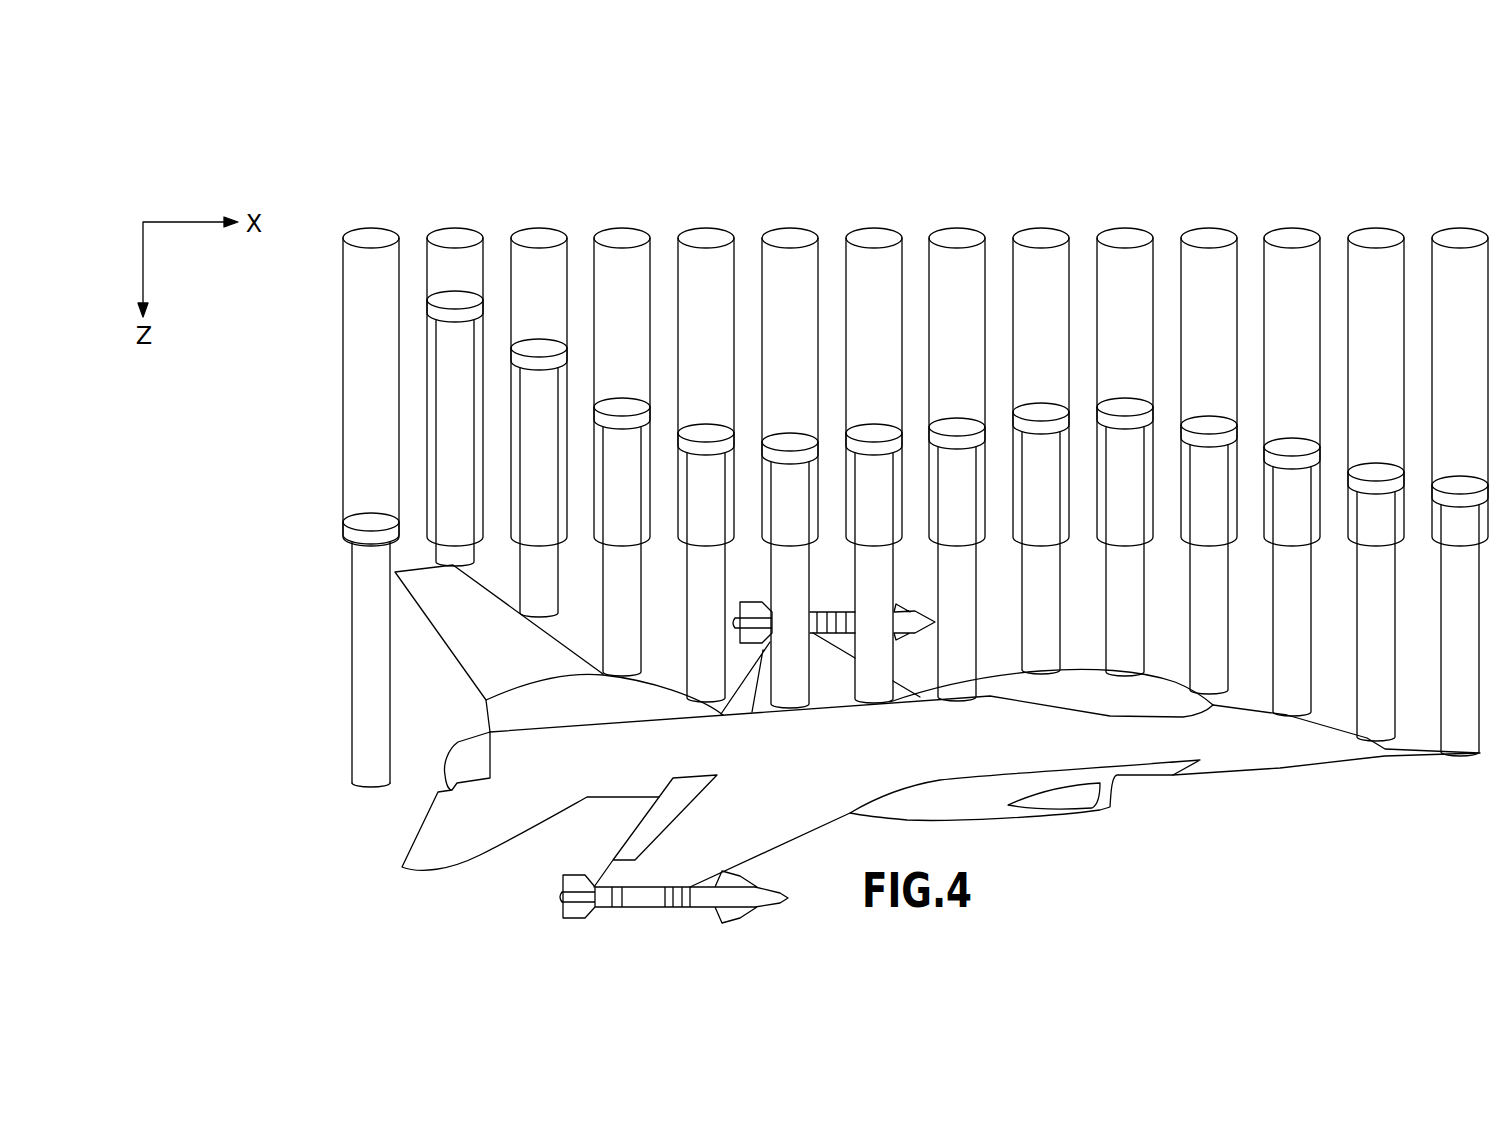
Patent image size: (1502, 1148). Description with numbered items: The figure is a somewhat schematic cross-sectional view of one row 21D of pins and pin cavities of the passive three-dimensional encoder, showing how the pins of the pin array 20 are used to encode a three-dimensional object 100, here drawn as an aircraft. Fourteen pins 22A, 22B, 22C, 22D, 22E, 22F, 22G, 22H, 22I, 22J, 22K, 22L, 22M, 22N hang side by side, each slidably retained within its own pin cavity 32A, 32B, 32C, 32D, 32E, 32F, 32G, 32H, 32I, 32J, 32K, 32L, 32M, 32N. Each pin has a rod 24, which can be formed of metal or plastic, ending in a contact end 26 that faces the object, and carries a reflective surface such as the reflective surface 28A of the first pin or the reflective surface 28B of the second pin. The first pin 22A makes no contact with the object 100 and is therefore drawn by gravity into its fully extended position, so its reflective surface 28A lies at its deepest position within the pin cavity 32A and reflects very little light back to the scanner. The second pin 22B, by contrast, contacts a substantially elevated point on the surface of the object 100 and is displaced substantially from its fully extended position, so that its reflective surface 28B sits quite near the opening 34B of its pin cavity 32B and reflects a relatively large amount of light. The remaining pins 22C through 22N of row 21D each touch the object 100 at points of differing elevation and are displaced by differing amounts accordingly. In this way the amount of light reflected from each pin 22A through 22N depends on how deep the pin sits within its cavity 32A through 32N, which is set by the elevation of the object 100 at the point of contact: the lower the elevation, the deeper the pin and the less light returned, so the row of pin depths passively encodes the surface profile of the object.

The pin array 20 is at (1232, 148).
The row 21D is at (310, 391).
The first pin 22A is at (337, 688).
The second pin 22B is at (455, 564).
The pin 22C is at (540, 615).
The pin 22D is at (622, 674).
The pin 22E is at (706, 700).
The pin 22F is at (790, 706).
The pin 22G is at (874, 701).
The pin 22H is at (957, 699).
The pin 22I is at (1041, 672).
The pin 22J is at (1125, 674).
The pin 22K is at (1209, 692).
The pin 22L is at (1292, 714).
The pin 22M is at (1376, 739).
The pin 22N is at (1460, 754).
The rod 24 is at (341, 688).
The contact end 26 is at (367, 787).
The reflective surface 28A is at (368, 520).
The reflective surface 28B is at (460, 297).
The pin cavity 32A is at (343, 268).
The pin cavity 32B is at (427, 268).
The pin cavity 32C is at (511, 268).
The pin cavity 32D is at (594, 268).
The pin cavity 32E is at (678, 268).
The pin cavity 32F is at (762, 268).
The pin cavity 32G is at (846, 268).
The pin cavity 32H is at (929, 268).
The pin cavity 32I is at (1013, 268).
The pin cavity 32J is at (1097, 268).
The pin cavity 32K is at (1181, 268).
The pin cavity 32L is at (1264, 268).
The pin cavity 32M is at (1348, 268).
The pin cavity 32N is at (1432, 268).
The opening 34B is at (457, 237).
The 3D object 100 is at (1062, 813).